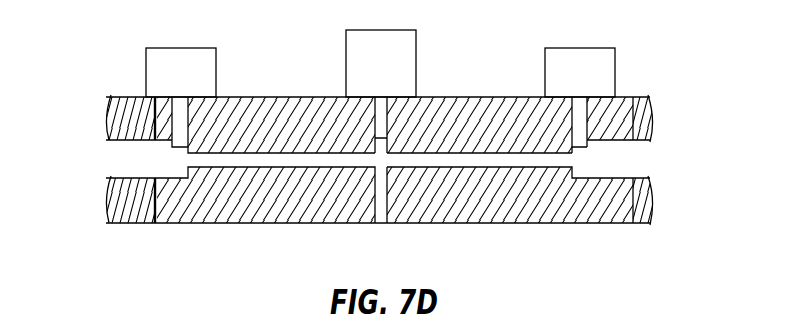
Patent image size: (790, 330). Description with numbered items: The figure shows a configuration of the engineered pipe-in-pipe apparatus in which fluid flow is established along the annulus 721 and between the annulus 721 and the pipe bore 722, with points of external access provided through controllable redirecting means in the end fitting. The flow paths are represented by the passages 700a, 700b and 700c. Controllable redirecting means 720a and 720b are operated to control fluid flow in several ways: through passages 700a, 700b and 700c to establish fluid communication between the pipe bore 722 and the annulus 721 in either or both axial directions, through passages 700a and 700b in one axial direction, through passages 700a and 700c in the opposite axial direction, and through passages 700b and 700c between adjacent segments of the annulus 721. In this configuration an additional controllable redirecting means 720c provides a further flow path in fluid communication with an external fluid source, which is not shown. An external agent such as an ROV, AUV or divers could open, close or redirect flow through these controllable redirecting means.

The controllable redirecting means 720a is at (181, 48).
The controllable redirecting means 720b is at (580, 48).
The additional controllable redirecting means 720c is at (381, 30).
The passage 700a is at (380, 212).
The passage 700b is at (550, 160).
The passage 700c is at (210, 160).
The annulus 721 is at (630, 161).
The pipe bore 722 is at (161, 241).